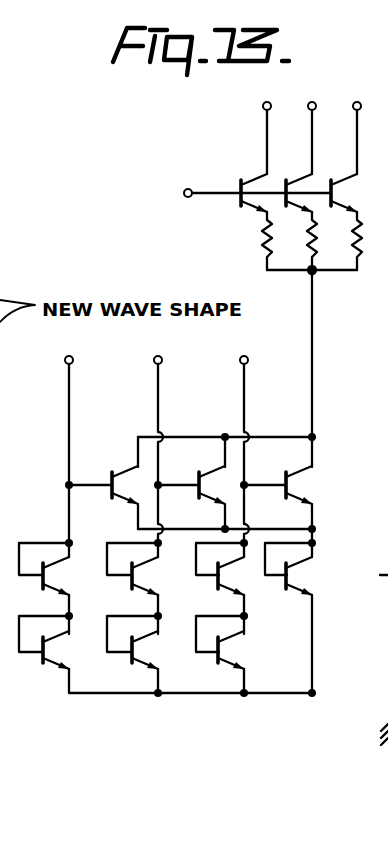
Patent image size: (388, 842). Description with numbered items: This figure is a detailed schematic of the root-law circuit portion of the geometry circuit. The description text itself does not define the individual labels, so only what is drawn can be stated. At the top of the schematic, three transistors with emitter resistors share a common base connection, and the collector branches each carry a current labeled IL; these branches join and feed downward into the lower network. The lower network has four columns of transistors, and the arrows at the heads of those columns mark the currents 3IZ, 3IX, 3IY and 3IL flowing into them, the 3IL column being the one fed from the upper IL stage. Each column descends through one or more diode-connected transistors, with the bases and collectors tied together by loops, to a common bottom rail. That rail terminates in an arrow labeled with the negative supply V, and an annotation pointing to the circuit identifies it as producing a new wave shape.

The load current branch IL is at (387, 155).
The 3Iz current input 3IZ is at (93, 524).
The 3Ix current input 3IX is at (183, 524).
The 3Iy current input 3IY is at (268, 524).
The 3IL current input 3IL is at (368, 402).
The negative supply - V is at (290, 752).